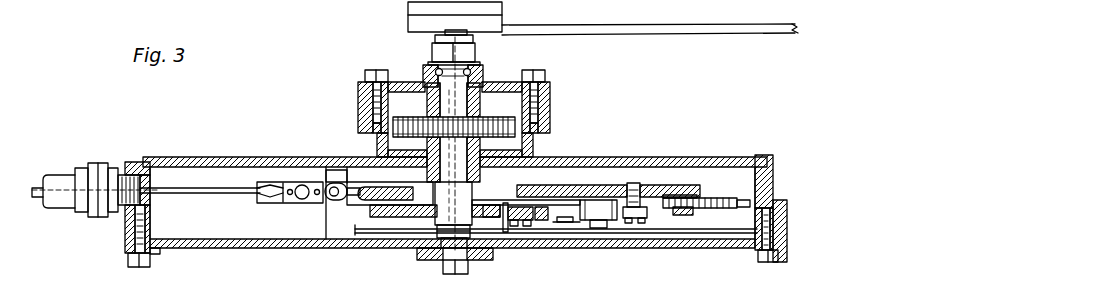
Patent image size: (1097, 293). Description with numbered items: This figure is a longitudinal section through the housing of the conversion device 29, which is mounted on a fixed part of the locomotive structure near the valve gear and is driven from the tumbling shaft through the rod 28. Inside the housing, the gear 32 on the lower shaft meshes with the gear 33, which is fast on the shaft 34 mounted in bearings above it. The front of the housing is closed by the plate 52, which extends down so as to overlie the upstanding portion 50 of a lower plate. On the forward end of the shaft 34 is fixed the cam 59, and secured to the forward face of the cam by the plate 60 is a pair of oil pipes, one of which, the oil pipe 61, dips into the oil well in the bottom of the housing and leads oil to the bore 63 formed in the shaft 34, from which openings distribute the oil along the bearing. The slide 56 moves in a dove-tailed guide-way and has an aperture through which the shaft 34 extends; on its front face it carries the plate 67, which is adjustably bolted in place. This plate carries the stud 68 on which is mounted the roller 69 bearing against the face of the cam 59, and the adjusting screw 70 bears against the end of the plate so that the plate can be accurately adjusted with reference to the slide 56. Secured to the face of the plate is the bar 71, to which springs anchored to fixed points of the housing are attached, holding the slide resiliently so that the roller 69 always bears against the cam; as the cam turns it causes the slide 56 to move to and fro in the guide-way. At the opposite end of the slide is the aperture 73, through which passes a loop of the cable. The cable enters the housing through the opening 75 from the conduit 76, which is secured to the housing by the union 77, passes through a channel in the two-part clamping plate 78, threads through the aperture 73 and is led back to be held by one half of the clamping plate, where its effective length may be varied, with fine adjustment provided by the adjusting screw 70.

The rod 28 is at (688, 36).
The housing of the conversion device 29 is at (410, 11).
The gear 32 is at (500, 113).
The gear 33 is at (440, 100).
The shaft 34 is at (458, 90).
The upstanding portion 50 is at (388, 234).
The plate 52 is at (308, 244).
The slide 56 is at (624, 196).
The cam 59 is at (571, 219).
The plate 60 is at (520, 226).
The oil pipe 61 is at (550, 224).
The bore 63 is at (453, 148).
The plate 67 is at (667, 190).
The stud 68 is at (598, 229).
The roller 69 is at (621, 219).
The adjusting screw 70 is at (728, 197).
The bar 71 is at (692, 216).
The aperture 73 is at (347, 183).
The opening 75 is at (140, 172).
The conduit 76 is at (60, 174).
The union 77 is at (97, 163).
The two-part clamping plate 78 is at (270, 181).